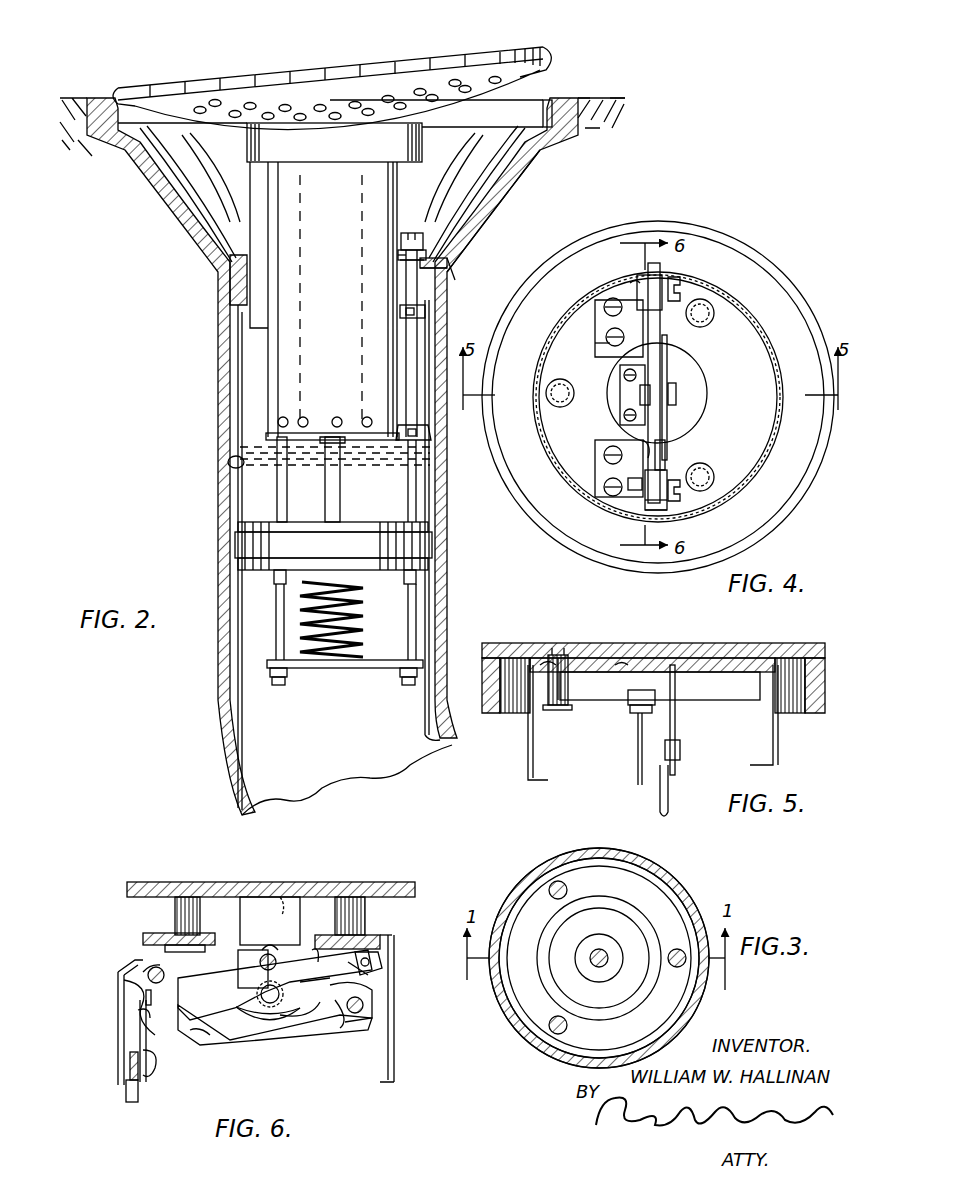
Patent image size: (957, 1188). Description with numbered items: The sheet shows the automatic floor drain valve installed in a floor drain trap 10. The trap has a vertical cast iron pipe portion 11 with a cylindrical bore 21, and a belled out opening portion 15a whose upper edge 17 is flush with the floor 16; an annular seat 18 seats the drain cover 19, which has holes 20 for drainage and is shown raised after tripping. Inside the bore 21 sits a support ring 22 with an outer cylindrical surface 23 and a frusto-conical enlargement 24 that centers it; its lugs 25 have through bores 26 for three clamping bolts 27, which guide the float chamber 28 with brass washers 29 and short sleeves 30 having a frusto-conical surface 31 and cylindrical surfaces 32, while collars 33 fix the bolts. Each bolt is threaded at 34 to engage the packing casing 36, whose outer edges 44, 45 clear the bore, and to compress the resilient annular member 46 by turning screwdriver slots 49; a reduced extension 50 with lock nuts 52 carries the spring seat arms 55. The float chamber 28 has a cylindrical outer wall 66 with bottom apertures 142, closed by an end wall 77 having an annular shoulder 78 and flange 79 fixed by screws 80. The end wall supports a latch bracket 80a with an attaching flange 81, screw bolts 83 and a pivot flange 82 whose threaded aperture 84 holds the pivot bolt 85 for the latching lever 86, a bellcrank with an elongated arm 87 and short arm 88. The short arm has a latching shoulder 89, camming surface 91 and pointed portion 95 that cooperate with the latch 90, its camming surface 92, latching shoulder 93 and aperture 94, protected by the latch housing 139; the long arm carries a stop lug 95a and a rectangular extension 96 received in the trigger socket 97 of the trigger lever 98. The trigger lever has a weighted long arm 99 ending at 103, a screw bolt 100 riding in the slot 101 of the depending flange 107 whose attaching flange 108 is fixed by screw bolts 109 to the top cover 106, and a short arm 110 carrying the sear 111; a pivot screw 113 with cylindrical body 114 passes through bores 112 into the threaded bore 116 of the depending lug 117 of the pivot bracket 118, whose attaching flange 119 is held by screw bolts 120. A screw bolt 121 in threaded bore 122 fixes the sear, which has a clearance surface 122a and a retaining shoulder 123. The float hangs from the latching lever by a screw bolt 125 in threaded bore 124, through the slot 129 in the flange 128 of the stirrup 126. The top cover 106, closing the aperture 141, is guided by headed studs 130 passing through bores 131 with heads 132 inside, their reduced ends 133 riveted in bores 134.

In FIG. 2, the floor drain trap 10 is at (216, 380).
In FIG. 2, the vertical pipe portion 11 is at (225, 433).
In FIG. 3, the vertical pipe portion 11 is at (530, 1040).
In FIG. 2, the belled out opening portion 15a is at (522, 186).
In FIG. 2, the floor 16 is at (598, 98).
In FIG. 2, the upper edge 17 is at (572, 98).
In FIG. 2, the annular seat 18 is at (546, 108).
In FIG. 2, the drain cover 19 is at (334, 72).
In FIG. 2, the holes 20 is at (292, 98).
In FIG. 2, the cylindrical bore 21 is at (232, 464).
In FIG. 2, the support ring 22 is at (440, 292).
In FIG. 2, the outer cylindrical surface 23 is at (447, 277).
In FIG. 2, the frusto-conical enlargement 24 is at (460, 262).
In FIG. 2, the lugs 25 is at (400, 257).
In FIG. 2, the vertical through bore 26 is at (424, 258).
In FIG. 2, the clamping bolts 27 is at (412, 290).
In FIG. 3, the clamping bolts 27 is at (567, 888).
In FIG. 2, the float chamber 28 is at (398, 195).
In FIG. 6, the float chamber 28 is at (396, 1048).
In FIG. 2, the brass washers 29 is at (400, 252).
In FIG. 2, the short sleeves 30 is at (335, 459).
In FIG. 2, the frusto-conical surface 31 is at (394, 426).
In FIG. 2, the cylindrical surfaces 32 is at (430, 436).
In FIG. 2, the collars 33 is at (404, 315).
In FIG. 2, the threaded portion 34 is at (418, 585).
In FIG. 2, the packing casing 36 is at (302, 521).
In FIG. 2, the outer edge of packing casing 44 is at (238, 527).
In FIG. 2, the outer edge of pressure ring 45 is at (238, 564).
In FIG. 2, the resilient annular member 46 is at (333, 545).
In FIG. 2, the slots 49 is at (412, 233).
In FIG. 2, the reduced cylindrical extension 50 is at (408, 613).
In FIG. 2, the lock nuts 52 is at (287, 672).
In FIG. 2, the radially extending arms 55 is at (390, 666).
In FIG. 2, the apertures 142 is at (304, 417).
In FIG. 4, the cylindrical outer wall 66 is at (772, 446).
In FIG. 5, the cylindrical outer wall 66 is at (528, 757).
In FIG. 4, the end wall 77 is at (732, 332).
In FIG. 5, the end wall 77 is at (724, 658).
In FIG. 6, the end wall 77 is at (370, 935).
In FIG. 5, the annular shoulder 78 is at (790, 713).
In FIG. 4, the annular flange 79 is at (750, 463).
In FIG. 5, the annular flange 79 is at (770, 700).
In FIG. 5, the screws 80 is at (522, 700).
In FIG. 4, the latch bracket 80a is at (601, 326).
In FIG. 4, the attaching flange 81 is at (600, 357).
In FIG. 4, the pivot flange 82 is at (630, 283).
In FIG. 4, the screw bolts 83 is at (606, 302).
In FIG. 4, the threaded aperture 84 is at (640, 275).
In FIG. 4, the pivot bolt 85 is at (678, 277).
In FIG. 6, the pivot bolt 85 is at (150, 968).
In FIG. 4, the latching lever 86 is at (656, 328).
In FIG. 6, the latching lever 86 is at (176, 964).
In FIG. 4, the trigger lever 98 is at (668, 442).
In FIG. 5, the trigger lever 98 is at (660, 792).
In FIG. 6, the trigger lever 98 is at (312, 1010).
In FIG. 4, the screw bolt 100 is at (654, 392).
In FIG. 5, the screw bolt 100 is at (681, 750).
In FIG. 6, the screw bolt 100 is at (270, 1004).
In FIG. 5, the slot 101 is at (676, 735).
In FIG. 4, the top cover 106 is at (790, 497).
In FIG. 5, the top cover 106 is at (762, 643).
In FIG. 6, the top cover 106 is at (366, 882).
In FIG. 5, the depending flange 107 is at (675, 692).
In FIG. 5, the attaching flange 108 is at (623, 660).
In FIG. 4, the screw bolts 109 is at (620, 375).
In FIG. 6, the screw bolts 109 is at (288, 905).
In FIG. 4, the pivot screw 113 is at (672, 480).
In FIG. 6, the pivot screw 113 is at (360, 1010).
In FIG. 4, the cylindrical body 114 is at (664, 504).
In FIG. 4, the threaded bore 116 is at (644, 500).
In FIG. 4, the depending lug 117 is at (637, 525).
In FIG. 4, the pivot bracket 118 is at (601, 466).
In FIG. 4, the attaching flange 119 is at (633, 444).
In FIG. 4, the screw bolts 120 is at (604, 487).
In FIG. 4, the threaded bore 124 is at (666, 370).
In FIG. 4, the screw bolt 125 is at (636, 395).
In FIG. 5, the screw bolt 125 is at (628, 697).
In FIG. 6, the screw bolt 125 is at (248, 962).
In FIG. 4, the stirrup 126 is at (628, 408).
In FIG. 5, the stirrup 126 is at (636, 758).
In FIG. 4, the upwardly extending flange 128 is at (677, 393).
In FIG. 5, the upwardly extending flange 128 is at (640, 772).
In FIG. 5, the slot 129 is at (636, 715).
In FIG. 5, the headed studs 130 is at (556, 705).
In FIG. 6, the headed studs 130 is at (186, 897).
In FIG. 5, the bores 131 is at (562, 668).
In FIG. 5, the heads 132 is at (570, 710).
In FIG. 6, the heads 132 is at (258, 962).
In FIG. 5, the reduced ends 133 is at (557, 655).
In FIG. 5, the bores 134 is at (548, 656).
In FIG. 6, the elongated arm 87 is at (240, 960).
In FIG. 6, the short arm 88 is at (176, 1028).
In FIG. 6, the latching shoulder 89 is at (140, 990).
In FIG. 6, the latch 90 is at (118, 1037).
In FIG. 6, the curved camming surface 91 is at (138, 1012).
In FIG. 6, the curved camming surface 92 is at (159, 1063).
In FIG. 6, the latching shoulder 93 is at (128, 1080).
In FIG. 6, the aperture 94 is at (131, 1090).
In FIG. 6, the pointed portion 95 is at (160, 996).
In FIG. 6, the stop lug 95a is at (314, 950).
In FIG. 6, the reduced rectangular extension 96 is at (348, 897).
In FIG. 6, the trigger socket 97 is at (326, 1008).
In FIG. 6, the long arm 99 is at (236, 1012).
In FIG. 6, the end 103 is at (192, 1032).
In FIG. 6, the short arm 110 is at (318, 965).
In FIG. 6, the sear 111 is at (372, 992).
In FIG. 6, the bore 112 is at (364, 1005).
In FIG. 6, the screw bolt 121 is at (390, 935).
In FIG. 6, the threaded bore 122 is at (380, 954).
In FIG. 6, the clearance surface 122a is at (270, 962).
In FIG. 6, the shoulder 123 is at (372, 968).
In FIG. 6, the latch housing 139 is at (122, 968).
In FIG. 6, the aperture 141 is at (238, 918).